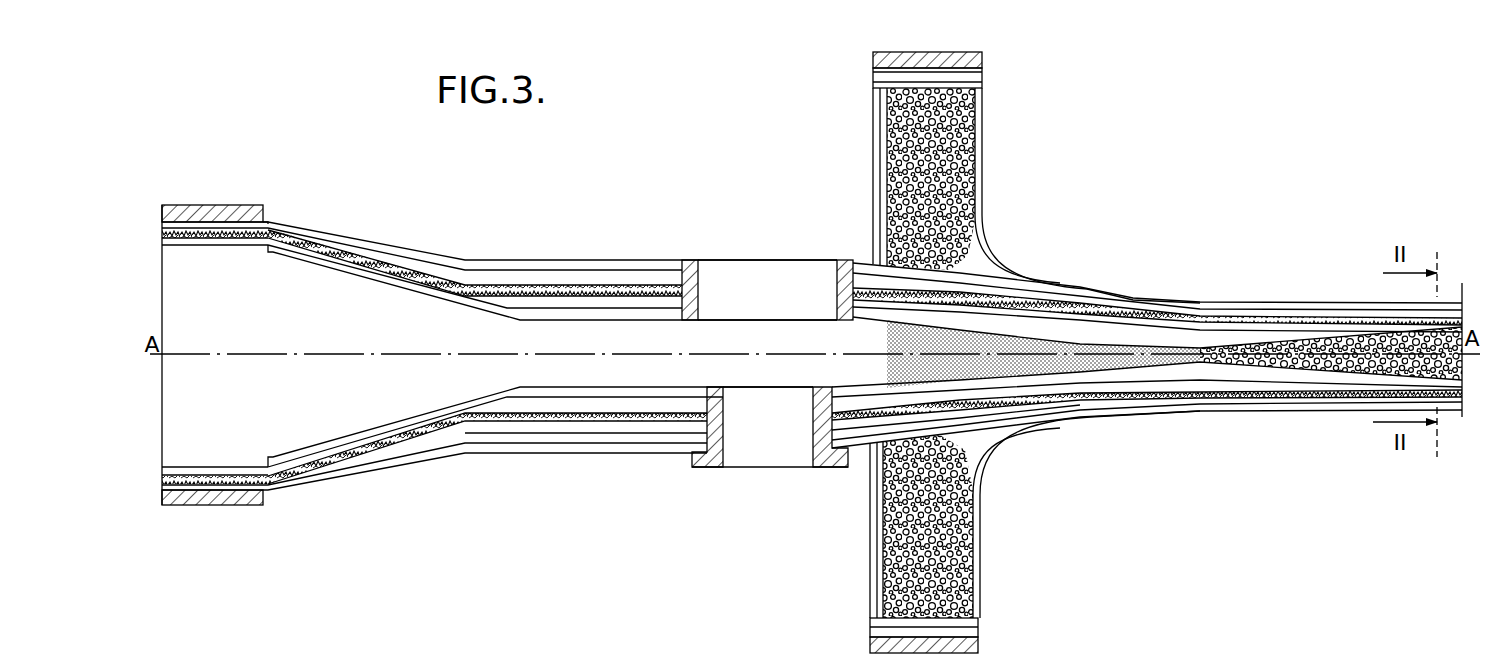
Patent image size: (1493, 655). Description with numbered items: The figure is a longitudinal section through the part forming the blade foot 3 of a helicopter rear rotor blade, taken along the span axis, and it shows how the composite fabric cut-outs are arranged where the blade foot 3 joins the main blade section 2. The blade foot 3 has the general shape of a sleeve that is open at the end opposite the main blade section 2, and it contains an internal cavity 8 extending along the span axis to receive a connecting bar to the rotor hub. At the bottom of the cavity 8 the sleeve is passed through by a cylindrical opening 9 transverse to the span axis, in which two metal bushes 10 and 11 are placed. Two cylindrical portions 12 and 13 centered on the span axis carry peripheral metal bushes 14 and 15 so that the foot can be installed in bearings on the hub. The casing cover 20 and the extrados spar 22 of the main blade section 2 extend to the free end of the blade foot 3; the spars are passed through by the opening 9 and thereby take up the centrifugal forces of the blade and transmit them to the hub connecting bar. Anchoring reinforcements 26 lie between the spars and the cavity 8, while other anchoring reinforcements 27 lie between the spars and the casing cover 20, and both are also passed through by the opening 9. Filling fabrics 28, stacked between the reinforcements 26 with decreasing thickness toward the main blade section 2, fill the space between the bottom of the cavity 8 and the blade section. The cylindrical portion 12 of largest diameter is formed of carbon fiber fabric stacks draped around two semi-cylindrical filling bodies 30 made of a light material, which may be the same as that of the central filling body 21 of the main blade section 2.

The main blade section 2 is at (1347, 405).
The part forming the blade foot 3 is at (1143, 290).
The internal cavity 8 is at (220, 427).
The cylindrical opening 9 is at (768, 283).
The metal bush 10 is at (690, 258).
The metal bush 11 is at (714, 469).
The cylindrical portion 12 is at (982, 85).
The cylindrical portion 13 is at (270, 222).
The peripheral metal bush 14 is at (873, 62).
The peripheral metal bush 15 is at (230, 210).
The casing cover 20 is at (1048, 290).
The central filling body 21 is at (1347, 337).
The extrados spar 22 is at (1228, 310).
The anchoring reinforcements 26 is at (1158, 330).
The anchoring reinforcements 27 is at (982, 290).
The filling fabrics 28 is at (1013, 342).
The filling bodies 30 is at (905, 163).